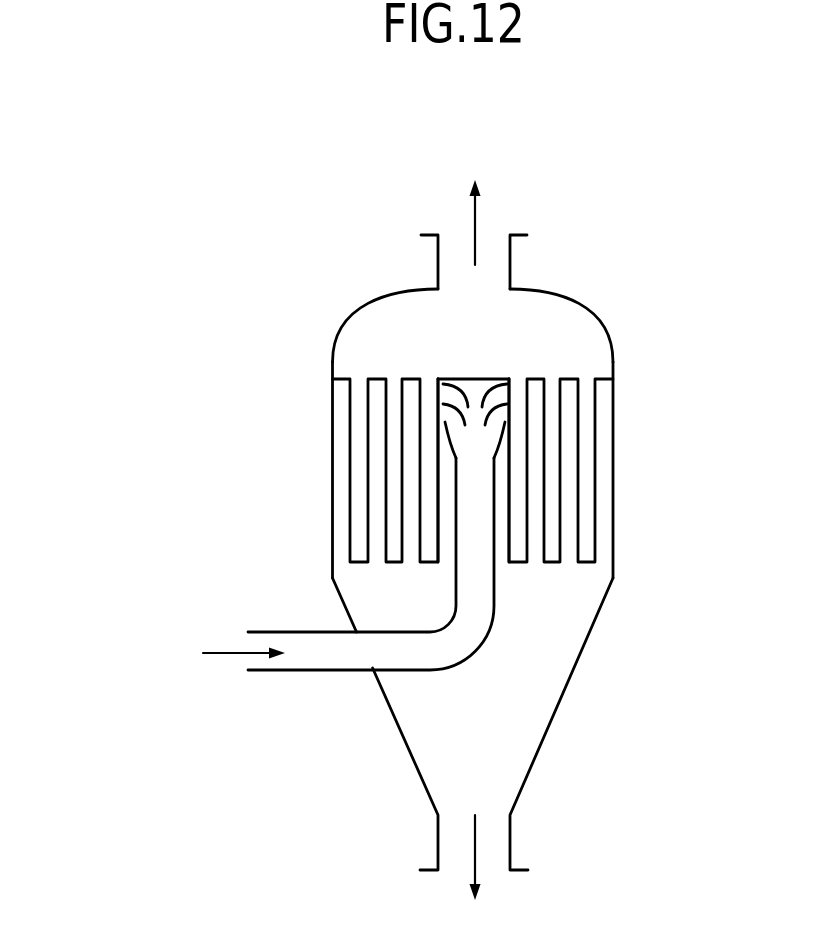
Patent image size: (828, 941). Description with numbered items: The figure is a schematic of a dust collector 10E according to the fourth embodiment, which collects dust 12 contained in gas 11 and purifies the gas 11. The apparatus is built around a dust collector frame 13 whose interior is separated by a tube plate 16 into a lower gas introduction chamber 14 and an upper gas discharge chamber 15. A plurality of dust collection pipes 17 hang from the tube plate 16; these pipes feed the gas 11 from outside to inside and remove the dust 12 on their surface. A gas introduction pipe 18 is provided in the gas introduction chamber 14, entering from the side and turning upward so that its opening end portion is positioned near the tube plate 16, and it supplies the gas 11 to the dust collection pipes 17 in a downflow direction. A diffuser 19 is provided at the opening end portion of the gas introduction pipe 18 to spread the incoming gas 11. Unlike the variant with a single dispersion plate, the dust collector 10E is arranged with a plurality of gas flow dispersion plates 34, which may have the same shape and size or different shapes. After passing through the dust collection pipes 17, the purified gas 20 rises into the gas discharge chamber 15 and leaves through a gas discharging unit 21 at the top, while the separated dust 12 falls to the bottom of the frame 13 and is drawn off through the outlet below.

The dust collector 10E is at (403, 184).
The gas 11 is at (218, 652).
The dust 12 is at (477, 872).
The dust collector frame 13 is at (613, 528).
The gas introduction chamber 14 is at (587, 628).
The gas discharge chamber 15 is at (582, 318).
The tube plate 16 is at (473, 379).
The dust collection pipes 17 is at (348, 438).
The gas introduction pipe 18 is at (487, 638).
The diffuser 19 is at (508, 442).
The purified gas 20 is at (475, 215).
The gas discharging unit 21 is at (510, 265).
The gas flow dispersion plates 34 is at (457, 379).